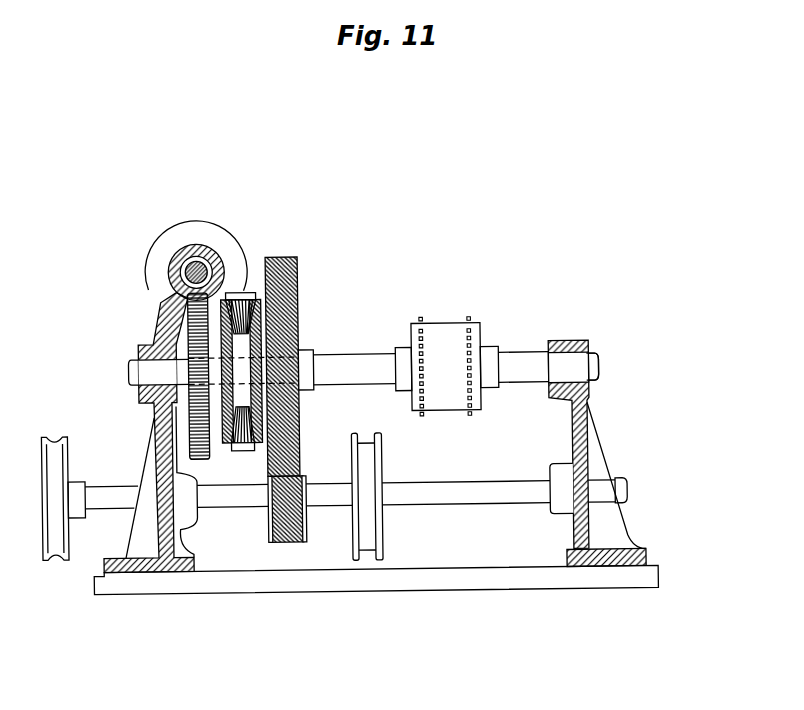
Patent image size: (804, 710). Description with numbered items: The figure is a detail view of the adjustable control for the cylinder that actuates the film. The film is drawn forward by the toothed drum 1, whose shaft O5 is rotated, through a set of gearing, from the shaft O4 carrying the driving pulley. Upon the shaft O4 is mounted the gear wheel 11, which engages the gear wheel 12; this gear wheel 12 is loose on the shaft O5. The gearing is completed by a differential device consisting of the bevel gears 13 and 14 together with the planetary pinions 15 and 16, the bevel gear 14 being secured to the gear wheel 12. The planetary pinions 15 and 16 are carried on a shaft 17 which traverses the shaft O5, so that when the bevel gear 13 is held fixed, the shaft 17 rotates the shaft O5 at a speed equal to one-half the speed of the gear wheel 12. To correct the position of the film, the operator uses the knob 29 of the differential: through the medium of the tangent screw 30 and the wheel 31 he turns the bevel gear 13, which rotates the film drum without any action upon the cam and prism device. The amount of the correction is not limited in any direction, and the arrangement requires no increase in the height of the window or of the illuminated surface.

The toothed drum 1 is at (447, 366).
The gear wheel 11 is at (302, 543).
The gear wheel 12 is at (297, 282).
The bevel gear 13 is at (232, 382).
The bevel gear 14 is at (310, 348).
The planetary pinion 15 is at (245, 297).
The planetary pinion 16 is at (246, 425).
The shaft of the planetary pinions 17 is at (300, 327).
The knob 29 is at (159, 252).
The tangent screw 30 is at (203, 258).
The wheel 31 is at (200, 338).
The shaft of the film drum O5 is at (610, 366).
The shaft carrying the driving pulley O4 is at (636, 487).